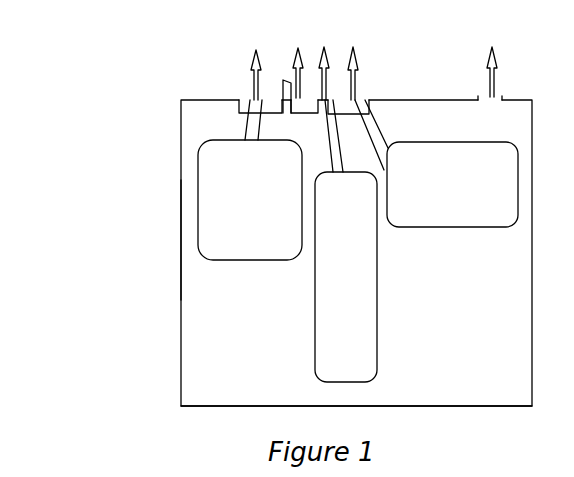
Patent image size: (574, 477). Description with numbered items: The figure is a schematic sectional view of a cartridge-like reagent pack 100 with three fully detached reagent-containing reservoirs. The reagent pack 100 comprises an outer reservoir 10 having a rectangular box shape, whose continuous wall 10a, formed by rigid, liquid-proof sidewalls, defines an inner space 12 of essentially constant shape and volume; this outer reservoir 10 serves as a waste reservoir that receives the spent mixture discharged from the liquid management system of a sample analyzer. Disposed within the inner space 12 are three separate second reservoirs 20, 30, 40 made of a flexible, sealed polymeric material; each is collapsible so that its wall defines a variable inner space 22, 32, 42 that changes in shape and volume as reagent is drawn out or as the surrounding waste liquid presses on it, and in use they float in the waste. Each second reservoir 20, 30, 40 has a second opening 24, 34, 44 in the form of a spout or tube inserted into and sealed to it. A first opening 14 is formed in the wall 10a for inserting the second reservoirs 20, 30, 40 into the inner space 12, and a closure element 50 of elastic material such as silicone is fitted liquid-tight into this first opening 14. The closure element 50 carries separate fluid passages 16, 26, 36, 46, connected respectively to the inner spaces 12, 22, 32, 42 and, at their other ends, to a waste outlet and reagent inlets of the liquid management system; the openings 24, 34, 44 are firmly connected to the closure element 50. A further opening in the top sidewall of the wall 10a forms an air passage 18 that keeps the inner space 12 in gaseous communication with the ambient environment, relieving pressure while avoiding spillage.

The reagent pack 100 is at (95, 92).
The outer reservoir 10 is at (182, 262).
The continuous wall 10a is at (182, 215).
The inner space 12 is at (195, 333).
The first opening 14 is at (242, 102).
The fluid passage 16 is at (282, 84).
The air passage 18 is at (500, 98).
The second reservoir 20 is at (247, 260).
The variable inner space 22 is at (250, 200).
The second opening 24 is at (252, 128).
The fluid passage 26 is at (252, 107).
The second reservoir 30 is at (377, 365).
The variable inner space 32 is at (346, 277).
The second opening 34 is at (330, 150).
The fluid passage 36 is at (330, 100).
The second reservoir 40 is at (462, 228).
The variable inner space 42 is at (452, 184).
The second opening 44 is at (372, 132).
The fluid passage 46 is at (360, 98).
The closure element 50 is at (363, 97).